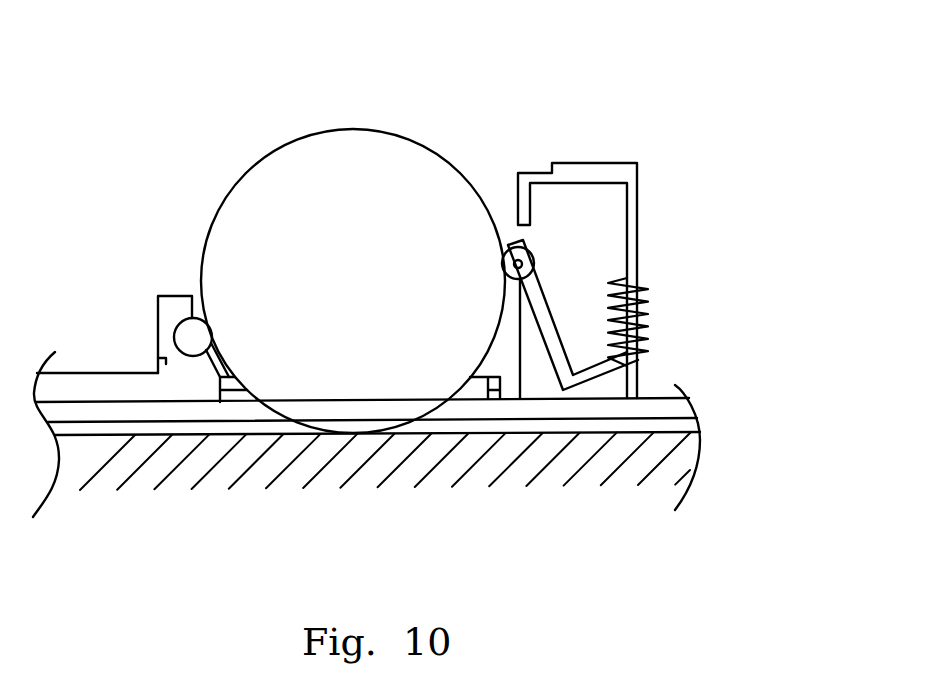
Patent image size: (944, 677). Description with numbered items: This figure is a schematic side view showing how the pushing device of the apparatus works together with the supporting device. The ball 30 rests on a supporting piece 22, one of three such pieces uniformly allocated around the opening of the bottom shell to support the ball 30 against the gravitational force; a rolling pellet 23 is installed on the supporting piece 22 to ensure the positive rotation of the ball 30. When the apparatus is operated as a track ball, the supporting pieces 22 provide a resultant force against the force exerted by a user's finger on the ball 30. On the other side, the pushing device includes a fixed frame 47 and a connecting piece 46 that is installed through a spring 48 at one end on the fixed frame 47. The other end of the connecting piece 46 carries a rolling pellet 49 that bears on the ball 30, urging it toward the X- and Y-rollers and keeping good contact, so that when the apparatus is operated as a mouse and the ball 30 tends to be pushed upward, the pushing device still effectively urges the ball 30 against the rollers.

The supporting piece 22 is at (160, 357).
The rolling pellet 23 is at (187, 333).
The ball 30 is at (320, 152).
The connecting piece 46 is at (540, 318).
The fixed frame 47 is at (637, 243).
The spring 48 is at (650, 338).
The rolling pellet 49 is at (521, 258).